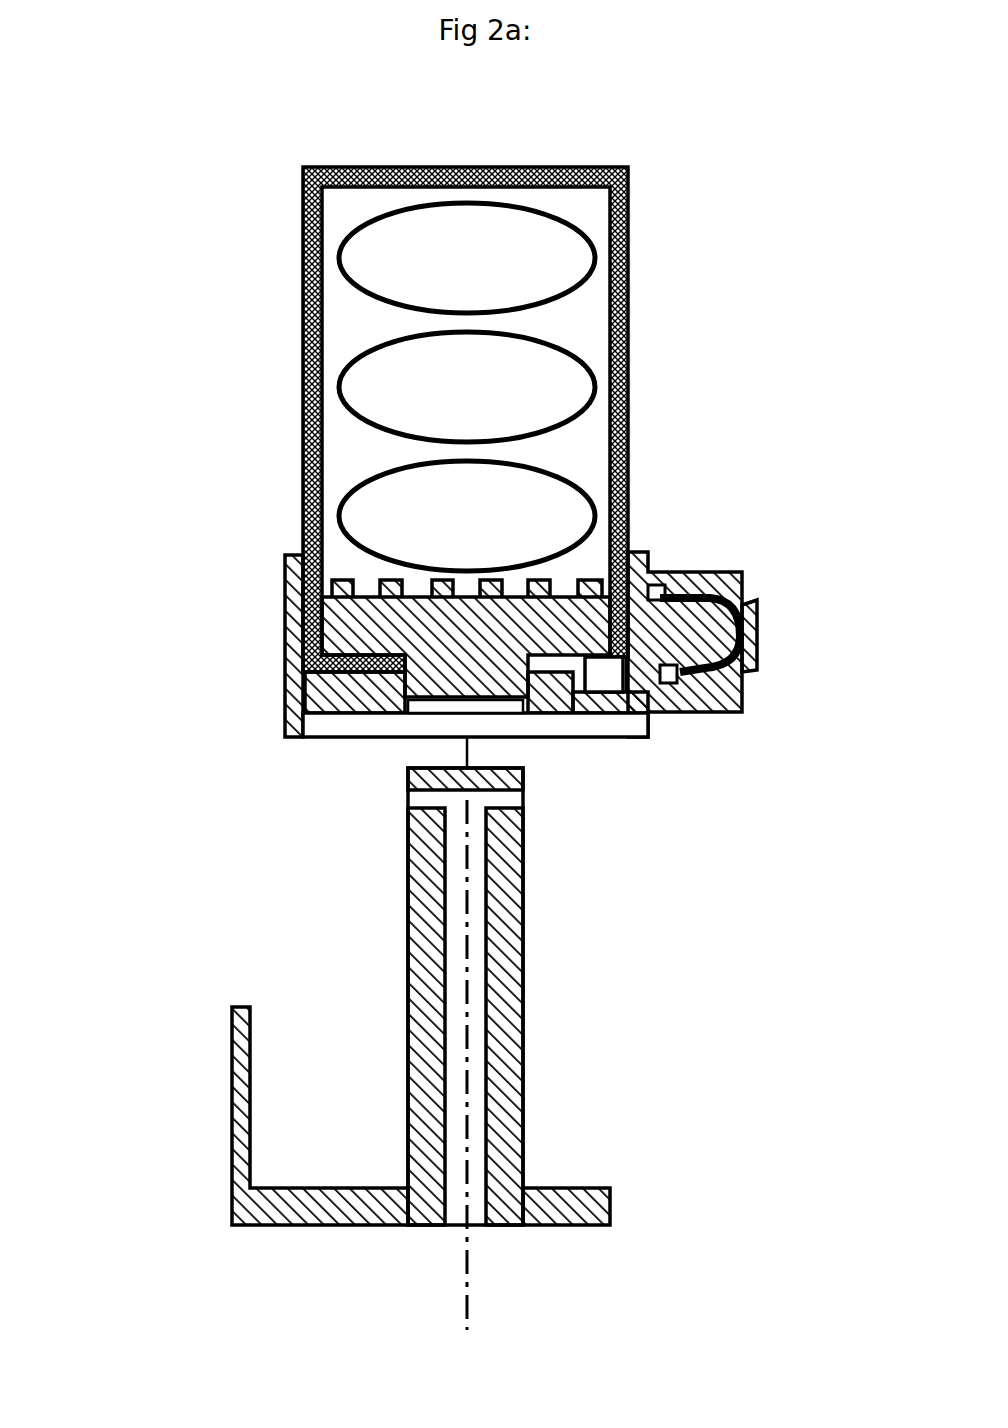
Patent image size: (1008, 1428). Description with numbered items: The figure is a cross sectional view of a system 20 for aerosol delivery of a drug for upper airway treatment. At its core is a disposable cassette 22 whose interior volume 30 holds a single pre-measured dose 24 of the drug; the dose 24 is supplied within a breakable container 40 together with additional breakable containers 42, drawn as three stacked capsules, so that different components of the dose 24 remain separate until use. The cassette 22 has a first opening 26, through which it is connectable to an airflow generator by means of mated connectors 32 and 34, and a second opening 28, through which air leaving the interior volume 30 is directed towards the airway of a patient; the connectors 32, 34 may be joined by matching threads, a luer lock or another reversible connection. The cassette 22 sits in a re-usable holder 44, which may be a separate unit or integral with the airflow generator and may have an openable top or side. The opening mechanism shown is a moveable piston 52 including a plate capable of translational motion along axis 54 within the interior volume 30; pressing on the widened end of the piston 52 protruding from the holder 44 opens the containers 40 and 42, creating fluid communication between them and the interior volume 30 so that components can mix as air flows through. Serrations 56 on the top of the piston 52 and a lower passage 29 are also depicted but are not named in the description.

The system 20 is at (485, 701).
The disposable cassette 22 is at (628, 215).
The single pre-measured dose 24 is at (450, 385).
The first opening 26 is at (452, 701).
The second opening 28 is at (748, 620).
The outlet 29 is at (500, 718).
The interior volume 30 is at (450, 385).
The connector 32 is at (457, 701).
The connector 34 is at (232, 1152).
The breakable container 40 is at (447, 278).
The additional breakable container 42 is at (520, 497).
The re-usable holder 44 is at (610, 1185).
The moveable piston 52 is at (352, 622).
The axis 54 is at (467, 1098).
The serrations 56 is at (345, 592).